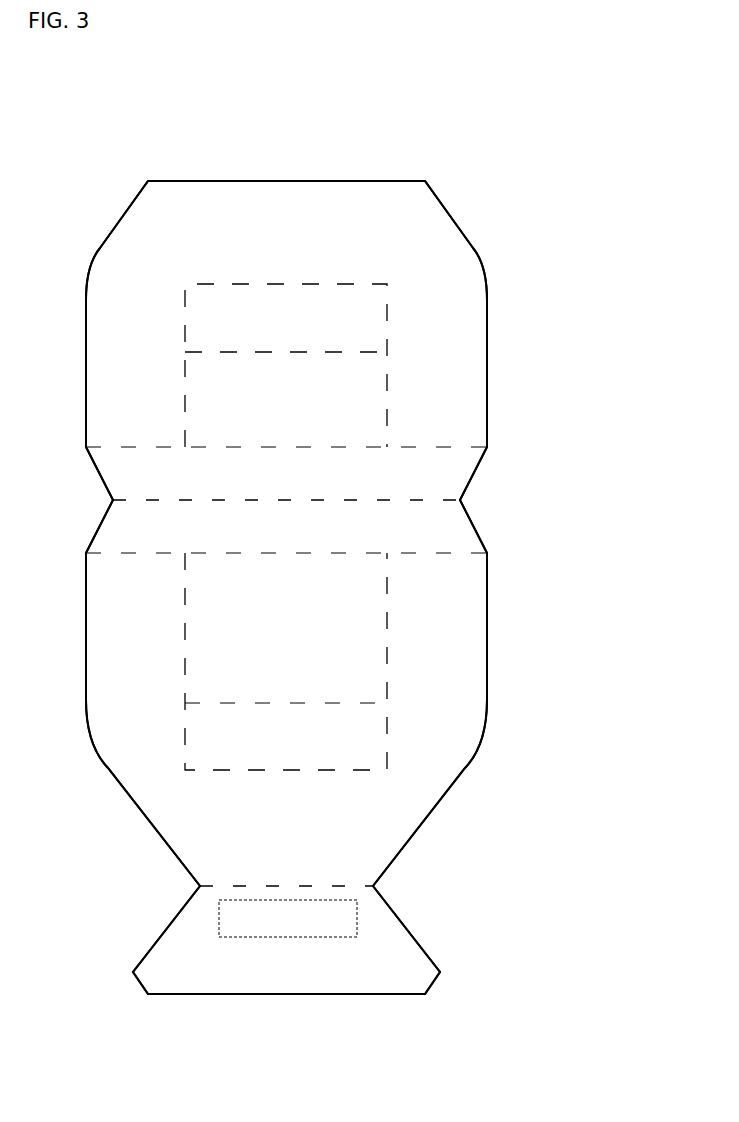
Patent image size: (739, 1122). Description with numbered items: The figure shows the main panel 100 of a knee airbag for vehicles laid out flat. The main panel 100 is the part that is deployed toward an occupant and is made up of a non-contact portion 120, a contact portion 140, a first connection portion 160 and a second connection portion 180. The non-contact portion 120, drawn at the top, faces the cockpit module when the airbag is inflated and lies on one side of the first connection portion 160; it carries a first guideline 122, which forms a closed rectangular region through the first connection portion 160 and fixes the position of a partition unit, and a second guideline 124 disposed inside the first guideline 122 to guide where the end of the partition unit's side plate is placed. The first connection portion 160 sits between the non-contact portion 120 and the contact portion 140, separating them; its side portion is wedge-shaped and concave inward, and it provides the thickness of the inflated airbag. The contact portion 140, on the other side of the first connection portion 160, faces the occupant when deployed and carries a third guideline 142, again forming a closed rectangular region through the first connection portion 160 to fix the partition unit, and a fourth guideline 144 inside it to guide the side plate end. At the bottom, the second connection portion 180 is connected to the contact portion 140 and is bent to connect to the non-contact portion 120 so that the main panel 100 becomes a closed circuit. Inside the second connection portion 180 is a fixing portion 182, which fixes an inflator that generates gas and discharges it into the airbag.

The main panel 100 is at (88, 104).
The non-contact portion 120 is at (505, 338).
The first guideline 122 is at (303, 284).
The second guideline 124 is at (242, 352).
The contact portion 140 is at (505, 609).
The third guideline 142 is at (388, 677).
The fourth guideline 144 is at (340, 703).
The first connection portion 160 is at (487, 489).
The second connection portion 180 is at (442, 930).
The fixing portion 182 is at (287, 937).